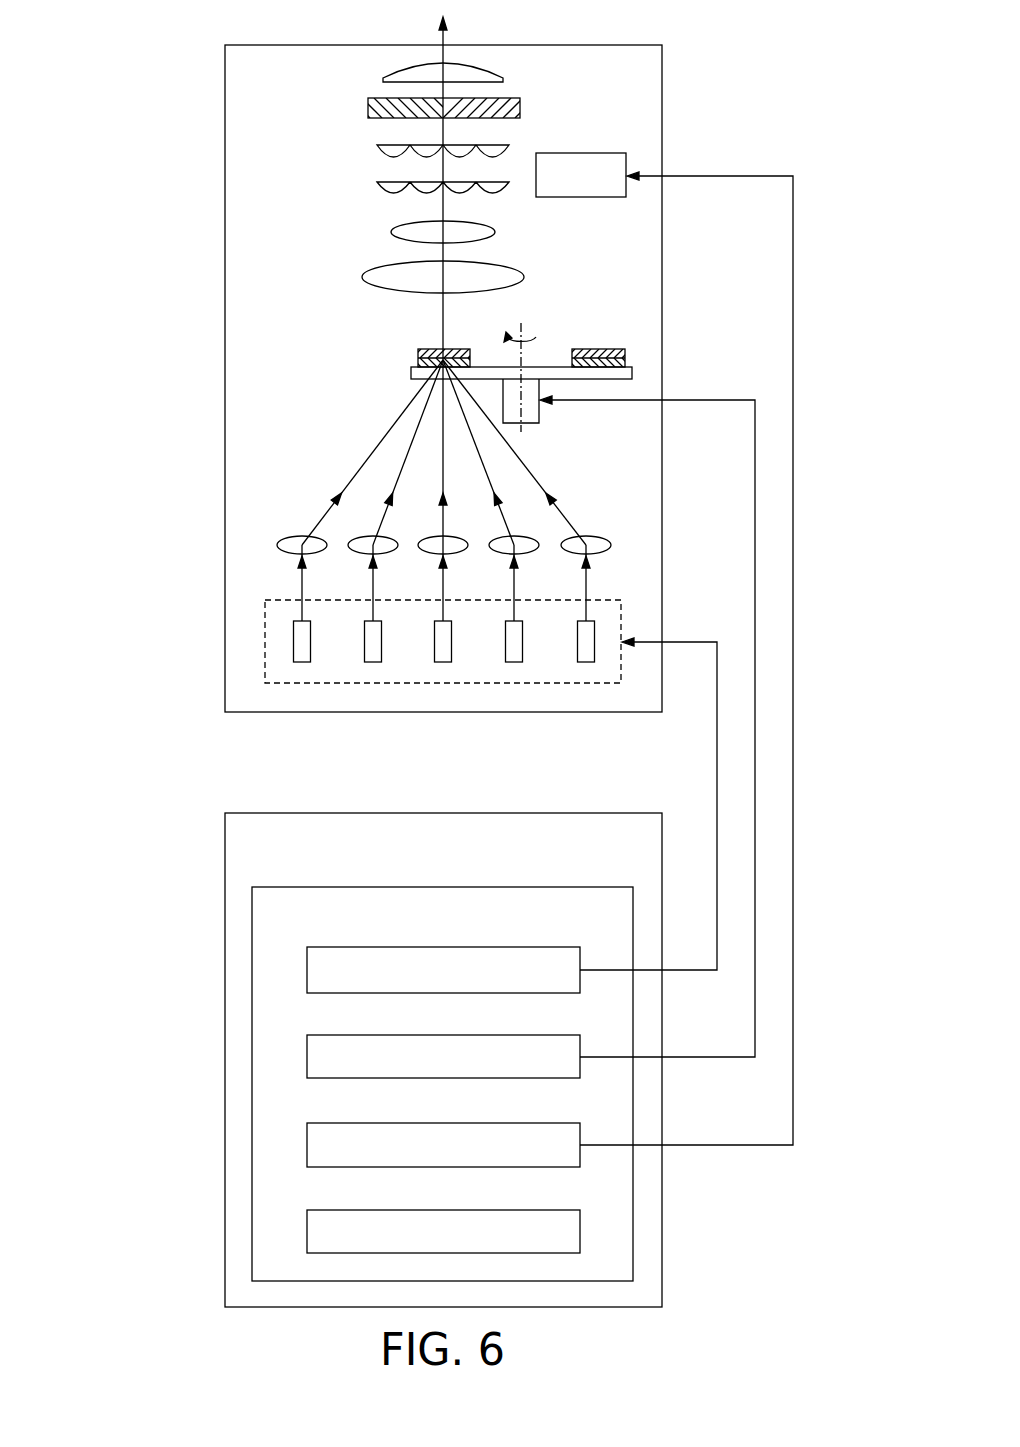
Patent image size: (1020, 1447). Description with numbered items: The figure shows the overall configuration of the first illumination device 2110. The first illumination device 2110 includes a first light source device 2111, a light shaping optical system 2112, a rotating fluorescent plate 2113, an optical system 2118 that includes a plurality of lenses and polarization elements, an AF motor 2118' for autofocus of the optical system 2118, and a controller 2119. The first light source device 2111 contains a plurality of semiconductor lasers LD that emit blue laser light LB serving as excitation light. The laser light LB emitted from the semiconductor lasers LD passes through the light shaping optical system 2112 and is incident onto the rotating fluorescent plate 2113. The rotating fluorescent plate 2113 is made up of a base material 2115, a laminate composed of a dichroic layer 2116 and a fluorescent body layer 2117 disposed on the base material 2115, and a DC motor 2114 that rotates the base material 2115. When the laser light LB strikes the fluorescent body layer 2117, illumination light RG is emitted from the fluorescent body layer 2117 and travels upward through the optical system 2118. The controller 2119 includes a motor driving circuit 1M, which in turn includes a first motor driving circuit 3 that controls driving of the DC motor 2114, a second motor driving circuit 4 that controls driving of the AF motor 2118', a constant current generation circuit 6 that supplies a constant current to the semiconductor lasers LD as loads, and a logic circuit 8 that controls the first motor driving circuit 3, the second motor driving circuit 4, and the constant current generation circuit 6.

The first illumination device 2110 is at (200, 165).
The first light source device 2111 is at (622, 660).
The light shaping optical system 2112 is at (630, 543).
The rotating fluorescent plate 2113 is at (554, 345).
The DC motor 2114 is at (530, 413).
The base material 2115 is at (493, 367).
The dichroic layer 2116 is at (624, 368).
The fluorescent body layer 2117 is at (609, 349).
The optical system 2118 is at (406, 176).
The AF motor 2118' is at (581, 141).
The controller 2119 is at (225, 850).
The motor driving circuit 1M is at (252, 922).
The constant current generation circuit 6 is at (307, 972).
The first motor driving circuit 3 is at (307, 1060).
The second motor driving circuit 4 is at (307, 1148).
The logic circuit 8 is at (307, 1233).
The laser light LB is at (302, 580).
The semiconductor lasers LD is at (302, 662).
The illumination light RG is at (446, 310).